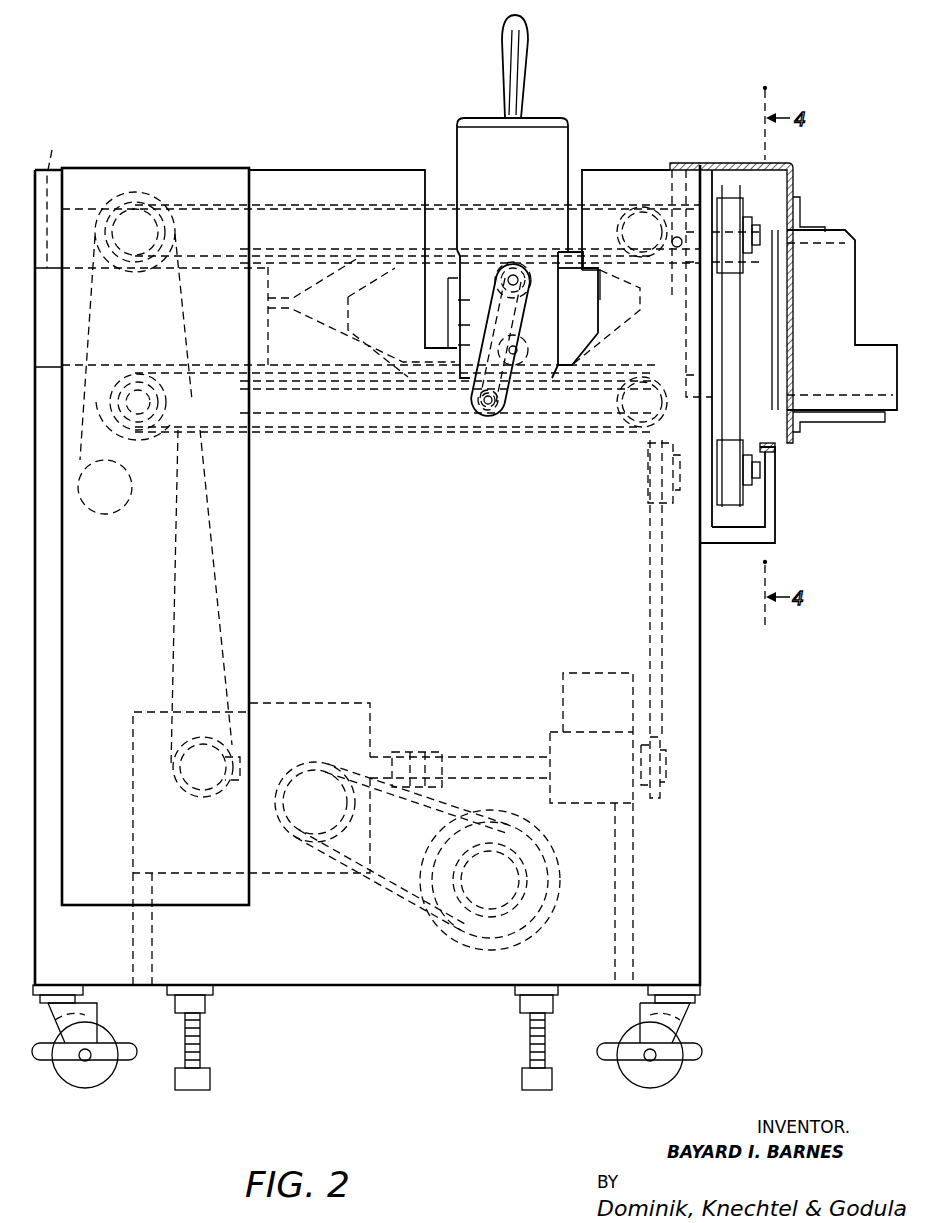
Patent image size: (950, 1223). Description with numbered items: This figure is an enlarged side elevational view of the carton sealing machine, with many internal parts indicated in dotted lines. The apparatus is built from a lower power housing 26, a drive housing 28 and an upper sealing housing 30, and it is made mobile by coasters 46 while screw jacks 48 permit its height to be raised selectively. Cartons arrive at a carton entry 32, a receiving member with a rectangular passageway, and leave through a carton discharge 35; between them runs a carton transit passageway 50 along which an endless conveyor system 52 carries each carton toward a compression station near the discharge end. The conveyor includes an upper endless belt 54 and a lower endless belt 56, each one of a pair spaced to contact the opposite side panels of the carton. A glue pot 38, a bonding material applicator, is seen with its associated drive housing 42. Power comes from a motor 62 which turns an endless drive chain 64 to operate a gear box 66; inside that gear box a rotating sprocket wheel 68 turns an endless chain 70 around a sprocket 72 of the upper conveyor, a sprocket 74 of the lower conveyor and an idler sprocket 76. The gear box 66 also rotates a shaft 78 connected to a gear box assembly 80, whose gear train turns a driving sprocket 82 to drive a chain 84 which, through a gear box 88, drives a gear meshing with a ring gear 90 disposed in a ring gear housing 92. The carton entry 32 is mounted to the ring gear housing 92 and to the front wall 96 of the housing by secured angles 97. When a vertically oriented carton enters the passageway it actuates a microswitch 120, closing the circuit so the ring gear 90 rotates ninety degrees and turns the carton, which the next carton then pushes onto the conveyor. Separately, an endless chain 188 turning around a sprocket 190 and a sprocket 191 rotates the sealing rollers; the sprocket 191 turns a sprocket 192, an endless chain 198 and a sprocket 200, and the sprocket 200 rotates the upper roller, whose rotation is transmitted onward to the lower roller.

The lower power housing 26 is at (702, 693).
The drive housing 28 is at (252, 548).
The upper sealing housing 30 is at (325, 170).
The carton entry 32 is at (858, 242).
The carton discharge 35 is at (60, 126).
The glue pot 38 is at (562, 118).
The drive housing 42 is at (511, 262).
The coasters 46 is at (85, 1085).
The leveling foot 48 is at (190, 1090).
The carton transit passageway 50 is at (337, 287).
The endless conveyor system 52 is at (508, 450).
The upper endless belt 54 is at (602, 200).
The lower endless belt 56 is at (567, 432).
The motor 62 is at (445, 935).
The endless drive chain 64 is at (383, 877).
The gear box 66 is at (303, 703).
The sprocket wheel 68 is at (190, 800).
The endless chain 70 is at (205, 480).
The sprocket 72 is at (142, 190).
The sprocket 74 is at (137, 372).
The idler sprocket 76 is at (103, 515).
The shaft 78 is at (478, 757).
The gear box assembly 80 is at (596, 673).
The driving sprocket 82 is at (666, 782).
The chain 84 is at (645, 560).
The gear box 88 is at (680, 503).
The ring gear 90 is at (740, 310).
The ring gear housing 92 is at (778, 508).
The front wall 96 is at (795, 170).
The secured angles 97 is at (800, 212).
The microswitch 120 is at (678, 236).
The endless chain 188 is at (380, 435).
The sprocket 190 is at (118, 432).
The sprocket 191 is at (500, 412).
The sprocket 192 is at (498, 396).
The endless chain 198 is at (522, 305).
The sprocket 200 is at (527, 268).